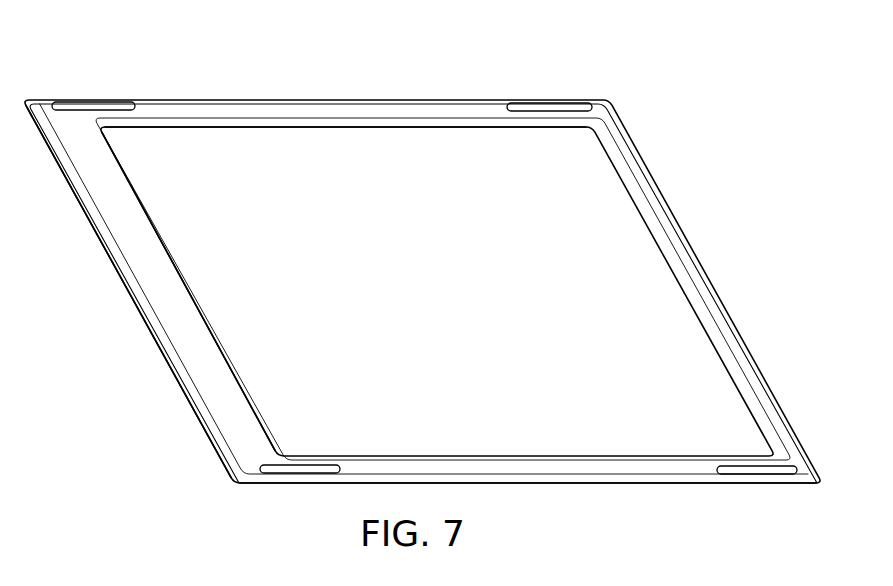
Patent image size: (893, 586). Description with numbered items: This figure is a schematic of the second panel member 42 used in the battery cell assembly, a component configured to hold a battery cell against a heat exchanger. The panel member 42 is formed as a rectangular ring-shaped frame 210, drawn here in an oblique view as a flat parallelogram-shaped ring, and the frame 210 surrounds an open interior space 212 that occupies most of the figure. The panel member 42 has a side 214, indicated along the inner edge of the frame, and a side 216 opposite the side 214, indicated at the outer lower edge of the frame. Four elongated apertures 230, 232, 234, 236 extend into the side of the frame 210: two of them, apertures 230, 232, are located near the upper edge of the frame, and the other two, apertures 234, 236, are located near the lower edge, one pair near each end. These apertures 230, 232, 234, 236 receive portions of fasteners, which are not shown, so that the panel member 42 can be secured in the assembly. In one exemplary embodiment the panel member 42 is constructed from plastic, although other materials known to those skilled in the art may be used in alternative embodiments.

The panel member 42 is at (644, 160).
The rectangular ring-shaped frame 210 is at (687, 255).
The interior space 212 is at (458, 290).
The side 214 is at (217, 390).
The side 216 is at (222, 462).
The aperture 230 is at (91, 106).
The aperture 232 is at (545, 107).
The aperture 234 is at (308, 467).
The aperture 236 is at (745, 466).